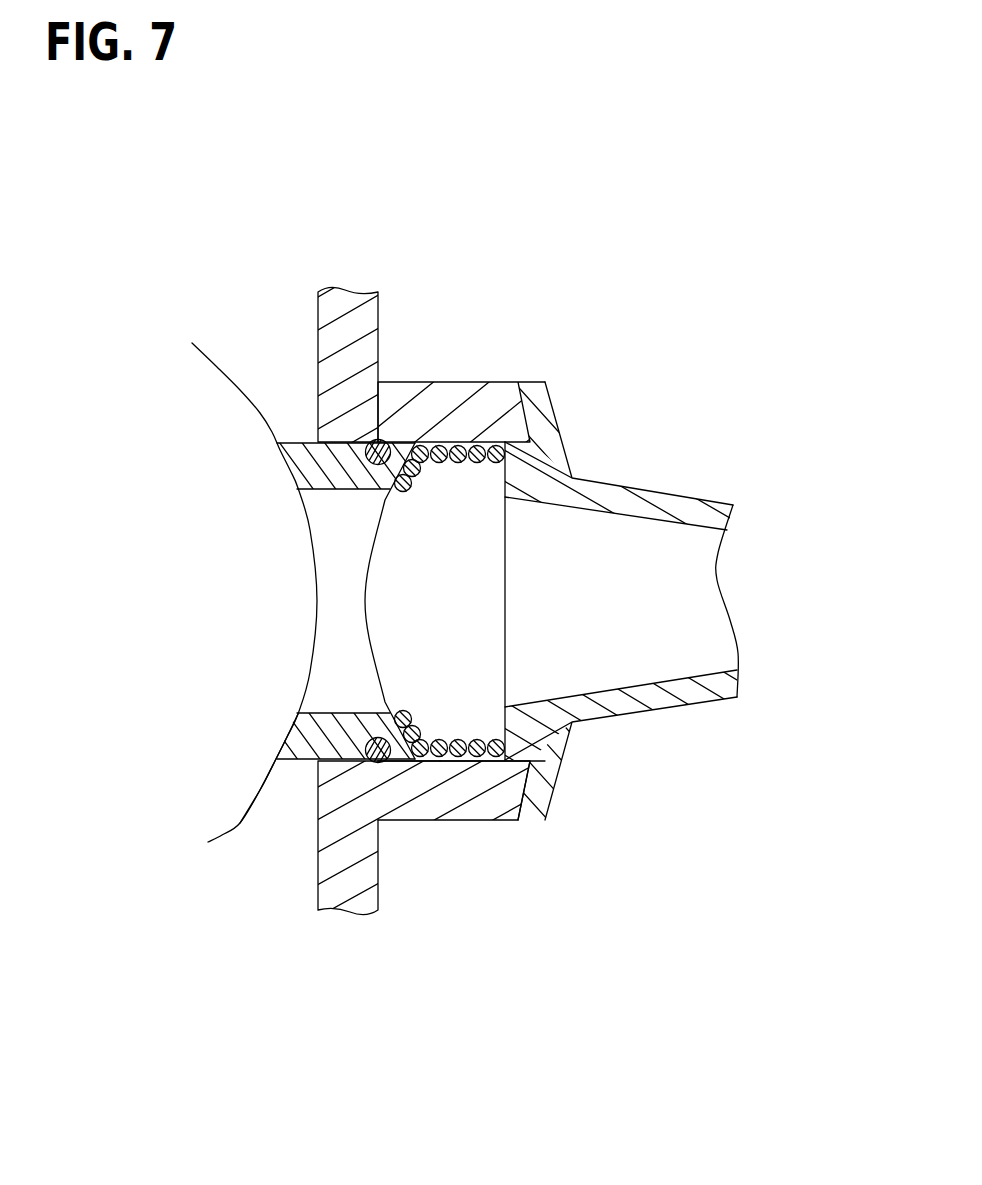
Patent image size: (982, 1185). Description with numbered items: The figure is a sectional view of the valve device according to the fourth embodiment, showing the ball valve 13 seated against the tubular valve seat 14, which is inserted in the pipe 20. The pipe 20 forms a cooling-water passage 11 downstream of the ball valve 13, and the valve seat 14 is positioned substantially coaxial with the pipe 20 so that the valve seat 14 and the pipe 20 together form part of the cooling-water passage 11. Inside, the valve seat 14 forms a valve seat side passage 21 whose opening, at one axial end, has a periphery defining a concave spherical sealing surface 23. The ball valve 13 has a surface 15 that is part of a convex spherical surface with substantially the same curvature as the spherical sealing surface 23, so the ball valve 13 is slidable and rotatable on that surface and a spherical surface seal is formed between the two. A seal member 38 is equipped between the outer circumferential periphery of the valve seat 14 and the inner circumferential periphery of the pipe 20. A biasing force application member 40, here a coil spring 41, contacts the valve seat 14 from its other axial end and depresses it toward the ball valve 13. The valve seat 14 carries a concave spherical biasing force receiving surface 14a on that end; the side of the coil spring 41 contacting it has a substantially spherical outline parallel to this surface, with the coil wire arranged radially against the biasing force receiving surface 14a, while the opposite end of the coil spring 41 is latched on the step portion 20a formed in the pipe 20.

The cooling-water passage 11 is at (672, 542).
The ball valve 13 is at (197, 383).
The valve seat 14 is at (334, 463).
The biasing force receiving surface 14a is at (428, 761).
The surface 15 is at (302, 447).
The pipe 20 is at (500, 413).
The step portion 20a is at (493, 758).
The valve seat side passage 21 is at (338, 613).
The spherical sealing surface 23 is at (287, 733).
The seal member 38 is at (382, 437).
The biasing force application member 40 is at (460, 707).
The coil spring 41 is at (453, 757).